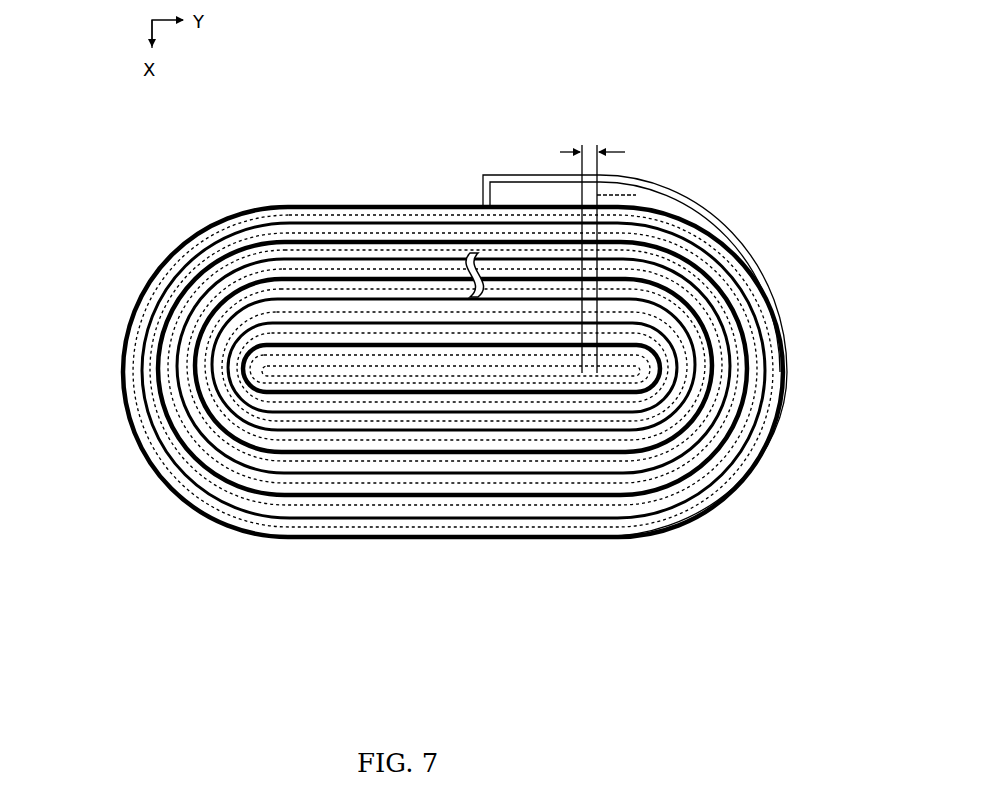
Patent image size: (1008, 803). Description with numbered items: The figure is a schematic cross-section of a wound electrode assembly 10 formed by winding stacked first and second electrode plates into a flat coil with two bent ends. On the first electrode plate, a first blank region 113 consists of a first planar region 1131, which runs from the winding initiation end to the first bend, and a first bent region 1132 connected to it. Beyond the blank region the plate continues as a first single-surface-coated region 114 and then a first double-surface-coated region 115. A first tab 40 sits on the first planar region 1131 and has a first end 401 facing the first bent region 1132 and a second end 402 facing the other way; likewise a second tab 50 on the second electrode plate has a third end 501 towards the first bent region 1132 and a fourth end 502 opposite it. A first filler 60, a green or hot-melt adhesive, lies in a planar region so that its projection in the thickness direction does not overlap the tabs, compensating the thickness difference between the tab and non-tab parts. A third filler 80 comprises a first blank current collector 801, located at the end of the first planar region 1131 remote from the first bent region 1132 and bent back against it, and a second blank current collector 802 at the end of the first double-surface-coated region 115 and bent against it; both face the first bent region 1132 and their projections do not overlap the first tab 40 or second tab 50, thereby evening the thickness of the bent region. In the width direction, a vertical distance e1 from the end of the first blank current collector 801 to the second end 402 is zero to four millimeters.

The electrode assembly 10 is at (317, 37).
The first blank region 113 is at (112, 190).
The first planar region 1131 is at (220, 226).
The first bent region 1132 is at (155, 271).
The second tab 50 is at (415, 153).
The third end 501 is at (346, 340).
The fourth end 502 is at (388, 325).
The first tab 40 is at (537, 124).
The first end 401 is at (543, 343).
The second end 402 is at (577, 343).
The vertical distance e1 is at (610, 251).
The first single-surface-coated region 114 is at (358, 395).
The first double-surface-coated region 115 is at (399, 527).
The first filler 60 is at (451, 395).
The third filler 80 is at (771, 598).
The first blank current collector 801 is at (643, 400).
The second blank current collector 802 is at (733, 473).